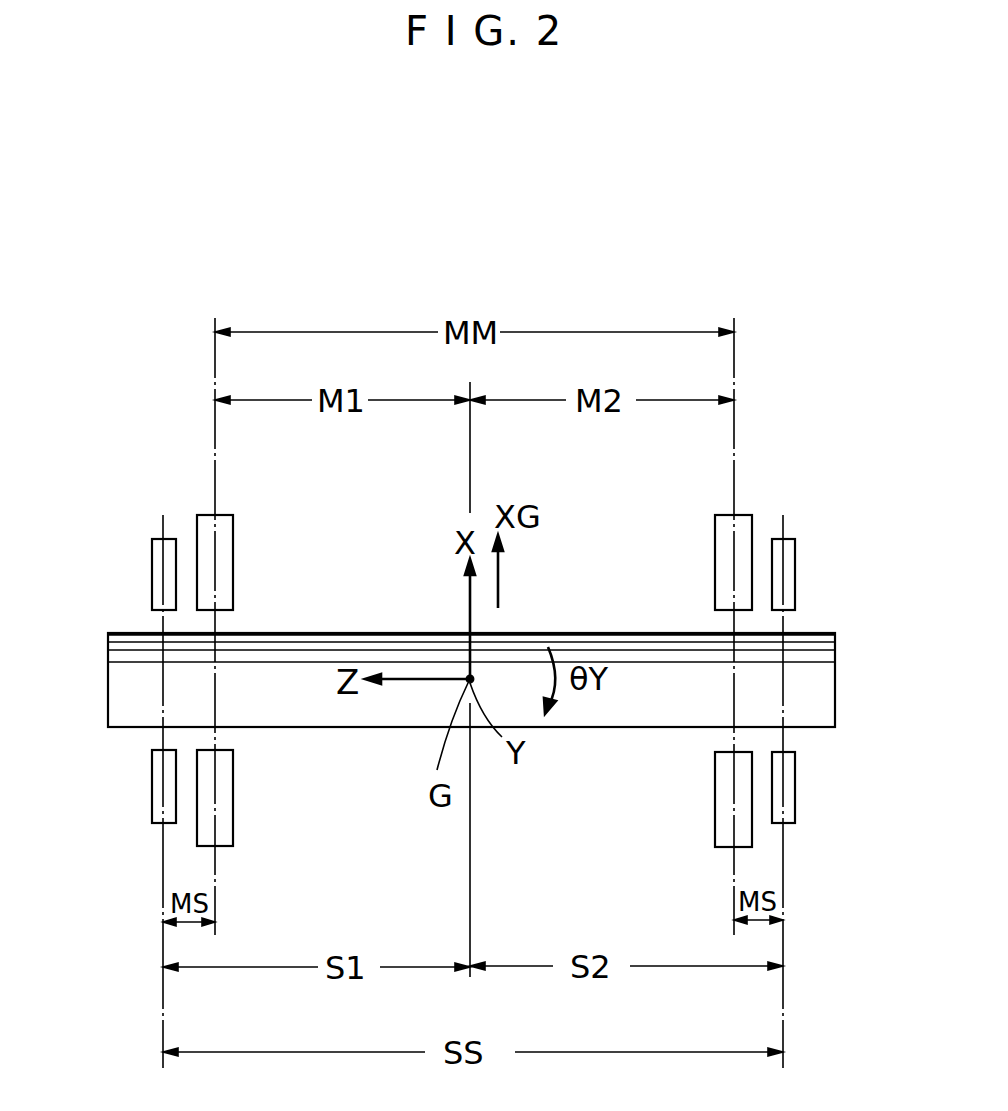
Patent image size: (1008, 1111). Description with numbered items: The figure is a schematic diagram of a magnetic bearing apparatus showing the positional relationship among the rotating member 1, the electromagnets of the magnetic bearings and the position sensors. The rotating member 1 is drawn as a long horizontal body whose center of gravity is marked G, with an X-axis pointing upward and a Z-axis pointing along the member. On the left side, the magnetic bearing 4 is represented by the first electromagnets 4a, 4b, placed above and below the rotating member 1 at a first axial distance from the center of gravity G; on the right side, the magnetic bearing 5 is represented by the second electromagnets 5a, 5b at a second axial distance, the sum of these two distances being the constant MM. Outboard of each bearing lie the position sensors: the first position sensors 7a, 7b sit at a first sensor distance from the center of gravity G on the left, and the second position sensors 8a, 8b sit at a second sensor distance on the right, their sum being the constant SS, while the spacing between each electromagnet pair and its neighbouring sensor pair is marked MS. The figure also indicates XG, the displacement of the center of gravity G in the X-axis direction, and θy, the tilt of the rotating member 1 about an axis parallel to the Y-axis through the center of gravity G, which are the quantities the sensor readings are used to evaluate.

The rotating member 1 is at (360, 728).
The magnetic bearing 4 is at (224, 644).
The first electromagnet 4a is at (233, 545).
The first electromagnet 4b is at (233, 815).
The magnetic bearing 5 is at (715, 621).
The second electromagnet 5a is at (715, 558).
The second electromagnet 5b is at (715, 812).
The first position sensor 7a is at (152, 562).
The first position sensor 7b is at (152, 800).
The second position sensor 8a is at (795, 553).
The second position sensor 8b is at (795, 810).